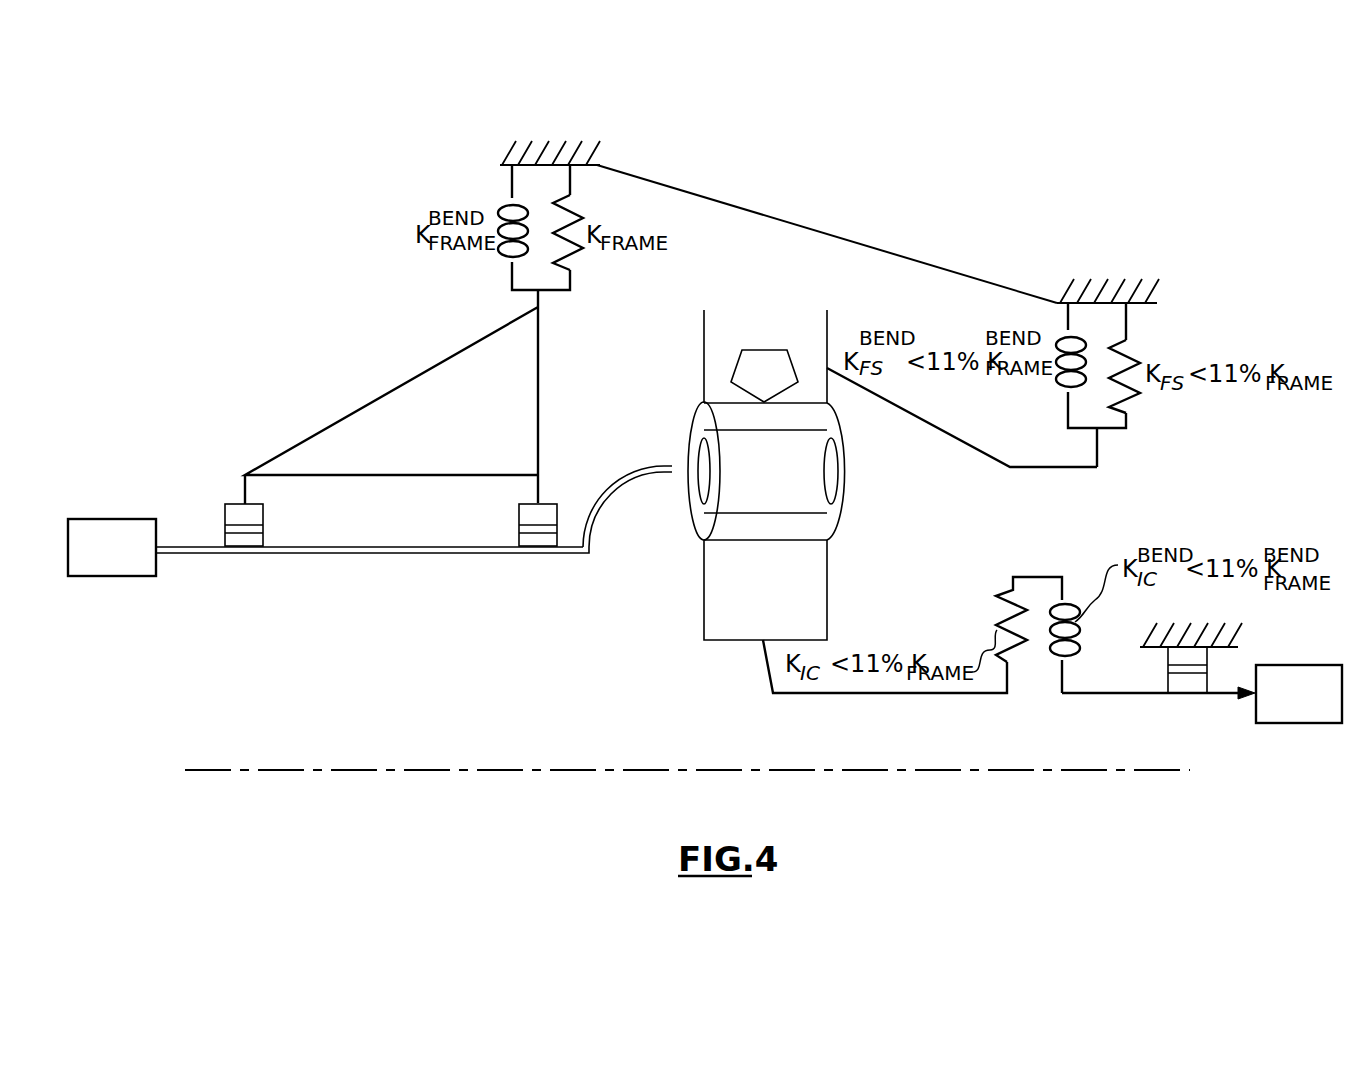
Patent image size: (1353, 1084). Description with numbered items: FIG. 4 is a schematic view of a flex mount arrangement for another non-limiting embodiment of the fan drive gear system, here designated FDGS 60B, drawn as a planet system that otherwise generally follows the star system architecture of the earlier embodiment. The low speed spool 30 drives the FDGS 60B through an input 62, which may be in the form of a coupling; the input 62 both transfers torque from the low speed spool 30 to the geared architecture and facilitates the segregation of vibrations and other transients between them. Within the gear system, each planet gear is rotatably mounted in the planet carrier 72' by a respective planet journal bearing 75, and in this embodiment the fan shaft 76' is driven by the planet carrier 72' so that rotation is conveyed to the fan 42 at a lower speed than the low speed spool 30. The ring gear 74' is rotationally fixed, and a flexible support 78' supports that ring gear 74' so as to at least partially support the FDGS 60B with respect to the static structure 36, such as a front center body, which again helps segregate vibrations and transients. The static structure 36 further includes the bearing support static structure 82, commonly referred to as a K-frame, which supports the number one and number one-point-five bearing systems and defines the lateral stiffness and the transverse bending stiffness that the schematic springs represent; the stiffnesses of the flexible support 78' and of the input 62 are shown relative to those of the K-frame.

The static structure 36 is at (902, 223).
The fan 42 is at (126, 559).
The bearing support static structure 82 is at (408, 372).
The fan shaft 76' is at (372, 576).
The planet carrier 72' is at (627, 479).
The ring gear 74' is at (730, 475).
The planet journal bearing 75 is at (770, 483).
The flexible support 78' is at (962, 452).
The input 62 is at (805, 697).
The low speed spool 30 is at (1314, 705).
The fan drive gear system 60B is at (593, 672).